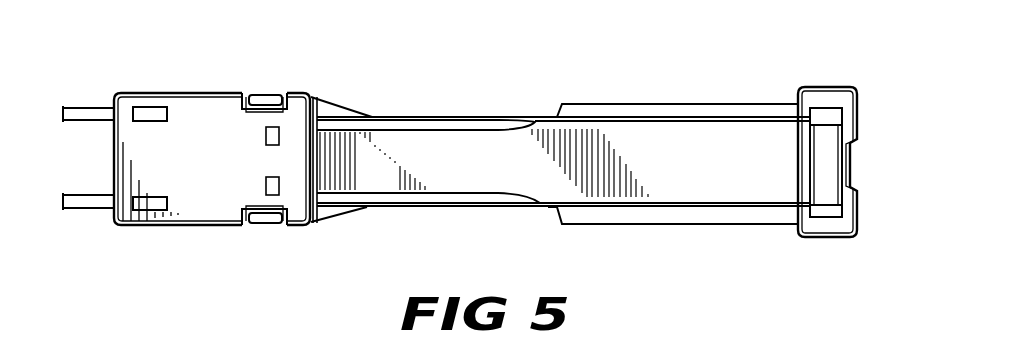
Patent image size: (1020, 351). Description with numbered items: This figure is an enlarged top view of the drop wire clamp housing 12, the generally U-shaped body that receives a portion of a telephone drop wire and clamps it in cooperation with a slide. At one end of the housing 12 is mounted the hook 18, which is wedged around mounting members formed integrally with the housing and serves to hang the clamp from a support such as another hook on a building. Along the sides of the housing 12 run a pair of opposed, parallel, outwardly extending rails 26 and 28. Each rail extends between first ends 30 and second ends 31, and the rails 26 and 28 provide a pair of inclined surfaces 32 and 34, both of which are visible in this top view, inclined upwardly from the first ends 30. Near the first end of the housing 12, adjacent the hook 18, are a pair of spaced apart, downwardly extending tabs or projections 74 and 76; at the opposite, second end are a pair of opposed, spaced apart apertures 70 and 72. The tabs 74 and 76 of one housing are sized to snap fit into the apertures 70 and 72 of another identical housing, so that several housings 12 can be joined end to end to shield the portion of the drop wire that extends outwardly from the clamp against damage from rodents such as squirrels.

The housing 12 is at (408, 114).
The hook 18 is at (100, 112).
The rail 26 is at (708, 226).
The rail 28 is at (725, 107).
The first ends 30 is at (553, 113).
The second ends 31 is at (793, 104).
The inclined surface 32 is at (638, 215).
The inclined surface 34 is at (650, 112).
The aperture 70 is at (827, 212).
The aperture 72 is at (823, 115).
The tab 74 is at (267, 93).
The tab 76 is at (262, 227).